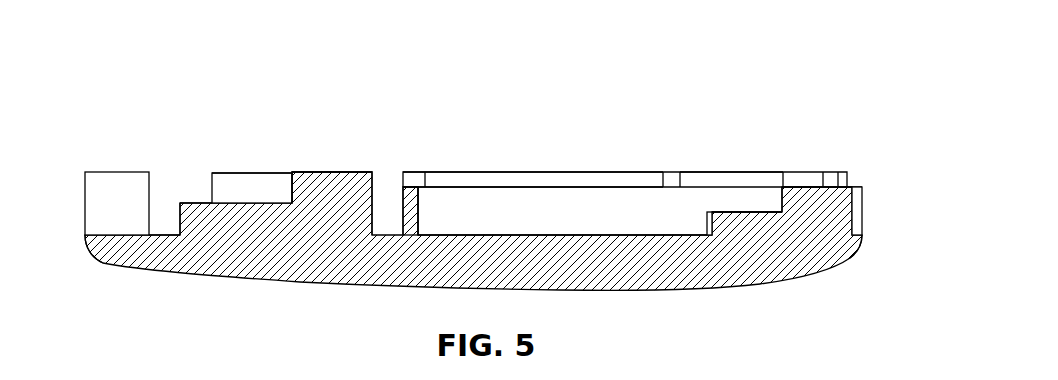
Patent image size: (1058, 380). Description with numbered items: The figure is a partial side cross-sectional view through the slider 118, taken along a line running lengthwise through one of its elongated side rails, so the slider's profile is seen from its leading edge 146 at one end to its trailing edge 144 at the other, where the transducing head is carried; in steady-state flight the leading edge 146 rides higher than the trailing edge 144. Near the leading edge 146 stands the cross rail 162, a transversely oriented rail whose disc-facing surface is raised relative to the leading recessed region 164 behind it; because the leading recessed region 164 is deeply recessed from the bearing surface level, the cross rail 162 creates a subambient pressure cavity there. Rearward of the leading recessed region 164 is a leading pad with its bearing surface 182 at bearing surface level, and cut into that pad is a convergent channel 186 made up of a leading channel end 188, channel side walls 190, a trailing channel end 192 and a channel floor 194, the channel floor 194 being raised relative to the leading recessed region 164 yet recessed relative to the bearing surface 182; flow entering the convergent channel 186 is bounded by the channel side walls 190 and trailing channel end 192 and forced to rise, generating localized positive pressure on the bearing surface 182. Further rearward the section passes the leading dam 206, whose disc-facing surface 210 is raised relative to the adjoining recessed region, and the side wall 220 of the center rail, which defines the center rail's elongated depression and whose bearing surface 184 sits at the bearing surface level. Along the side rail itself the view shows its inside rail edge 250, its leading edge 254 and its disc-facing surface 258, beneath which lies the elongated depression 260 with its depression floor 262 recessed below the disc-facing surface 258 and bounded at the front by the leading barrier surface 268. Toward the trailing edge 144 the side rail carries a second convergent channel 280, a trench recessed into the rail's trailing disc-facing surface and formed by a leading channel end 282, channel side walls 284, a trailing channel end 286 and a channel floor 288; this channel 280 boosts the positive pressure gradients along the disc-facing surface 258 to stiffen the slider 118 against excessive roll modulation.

The slider 118 is at (760, 62).
The trailing edge 144 is at (862, 237).
The leading edge 146 is at (84, 240).
The cross rail 162 is at (118, 172).
The leading recessed region 164 is at (154, 235).
The bearing surface 182 is at (327, 172).
The bearing surface 184 is at (743, 172).
The convergent channel 186 is at (223, 163).
The leading channel end 188 is at (180, 203).
The channel side walls 190 is at (247, 173).
The trailing channel end 192 is at (284, 185).
The channel floor 194 is at (195, 203).
The leading dam 206 is at (420, 178).
The disc-facing surface 210 is at (417, 172).
The side wall 220 is at (573, 172).
The inside rail edge 250 is at (510, 202).
The leading edge 254 is at (400, 210).
The disc-facing surface 258 is at (832, 172).
The elongated depression 260 is at (592, 195).
The depression floor 262 is at (540, 235).
The leading barrier surface 268 is at (418, 209).
The convergent channel 280 is at (718, 192).
The leading channel end 282 is at (707, 220).
The channel side walls 284 is at (737, 190).
The trailing channel end 286 is at (782, 196).
The channel floor 288 is at (753, 210).